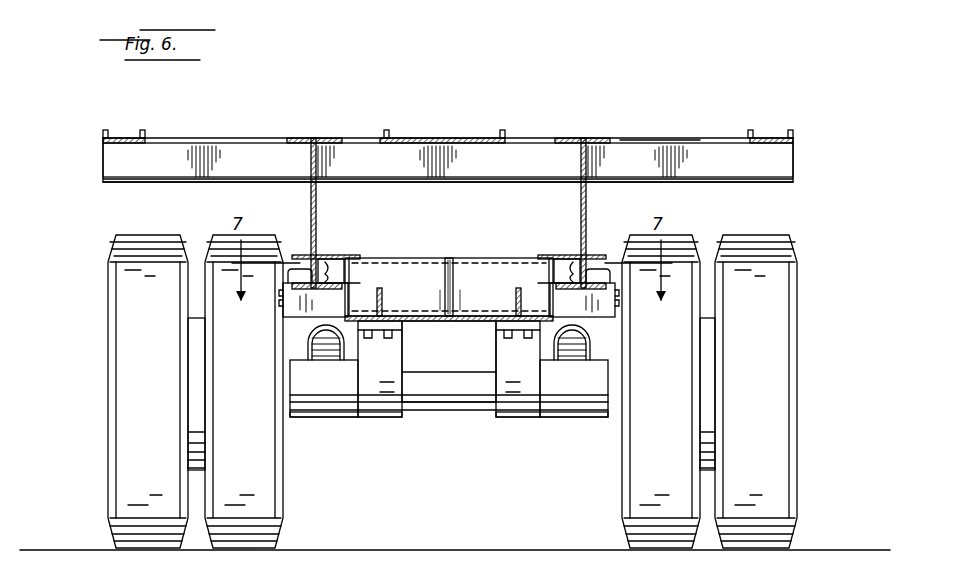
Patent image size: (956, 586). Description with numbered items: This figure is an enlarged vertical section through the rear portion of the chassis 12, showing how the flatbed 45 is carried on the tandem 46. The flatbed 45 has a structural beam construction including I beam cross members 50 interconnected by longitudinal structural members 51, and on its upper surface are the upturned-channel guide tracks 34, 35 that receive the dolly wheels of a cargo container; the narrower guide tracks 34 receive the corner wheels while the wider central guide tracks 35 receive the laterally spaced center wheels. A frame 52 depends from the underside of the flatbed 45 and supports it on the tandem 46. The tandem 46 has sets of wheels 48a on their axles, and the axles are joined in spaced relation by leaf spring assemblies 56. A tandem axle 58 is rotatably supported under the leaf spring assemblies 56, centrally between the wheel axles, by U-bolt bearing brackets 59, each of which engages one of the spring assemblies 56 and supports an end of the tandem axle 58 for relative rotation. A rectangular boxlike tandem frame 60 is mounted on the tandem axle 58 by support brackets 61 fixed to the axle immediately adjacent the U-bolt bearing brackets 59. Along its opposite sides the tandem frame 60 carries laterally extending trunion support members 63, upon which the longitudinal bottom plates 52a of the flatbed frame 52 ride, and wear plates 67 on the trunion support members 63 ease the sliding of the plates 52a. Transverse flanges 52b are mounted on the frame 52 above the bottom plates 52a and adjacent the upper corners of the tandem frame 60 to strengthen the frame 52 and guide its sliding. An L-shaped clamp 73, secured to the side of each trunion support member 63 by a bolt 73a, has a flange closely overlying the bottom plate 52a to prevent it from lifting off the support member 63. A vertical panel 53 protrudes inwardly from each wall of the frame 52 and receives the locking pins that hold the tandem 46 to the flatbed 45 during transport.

The chassis 12 is at (130, 185).
The guide tracks 34 is at (140, 133).
The central guide tracks 35 is at (500, 130).
The flatbed 45 is at (672, 140).
The tandem 46 is at (414, 412).
The wheels 48a is at (205, 415).
The I beam cross members 50 is at (552, 150).
The longitudinal structural members 51 is at (118, 140).
The frame 52 is at (311, 215).
The bottom plates 52a is at (342, 285).
The transverse flanges 52b is at (315, 255).
The vertical panel 53 is at (333, 262).
The leaf spring assemblies 56 is at (326, 352).
The tandem axle 58 is at (440, 400).
The U-bolt bearing brackets 59 is at (312, 417).
The tandem frame 60 is at (442, 262).
The support brackets 61 is at (500, 362).
The trunion support members 63 is at (305, 330).
The wear plates 67 is at (375, 303).
The L-shaped clamp 73 is at (286, 290).
The bolt 73a is at (283, 298).